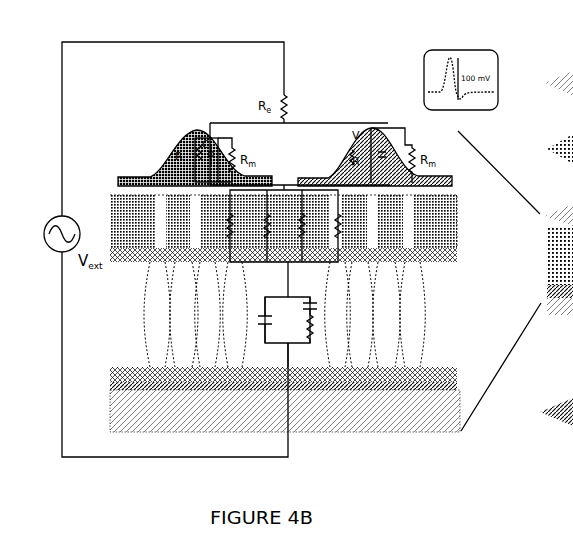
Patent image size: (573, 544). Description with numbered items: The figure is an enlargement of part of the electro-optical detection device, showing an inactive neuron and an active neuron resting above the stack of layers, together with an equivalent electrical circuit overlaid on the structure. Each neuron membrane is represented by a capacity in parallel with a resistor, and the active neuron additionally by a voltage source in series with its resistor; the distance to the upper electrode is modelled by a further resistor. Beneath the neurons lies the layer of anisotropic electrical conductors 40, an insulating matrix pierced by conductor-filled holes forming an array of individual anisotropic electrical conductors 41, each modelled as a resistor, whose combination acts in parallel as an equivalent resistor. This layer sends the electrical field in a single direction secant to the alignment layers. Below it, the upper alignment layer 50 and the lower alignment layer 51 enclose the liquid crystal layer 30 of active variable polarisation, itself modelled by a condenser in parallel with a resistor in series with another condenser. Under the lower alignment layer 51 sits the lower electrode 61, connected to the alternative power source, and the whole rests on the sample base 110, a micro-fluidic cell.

The individual anisotropic electrical conductor 41 is at (157, 191).
The layer of anisotropic electrical conductors 40 is at (459, 221).
The upper alignment layer 50 is at (459, 257).
The liquid crystal layer 30 is at (436, 292).
The lower alignment layer 51 is at (442, 365).
The lower electrode 61 is at (463, 379).
The sample base 110 is at (285, 411).